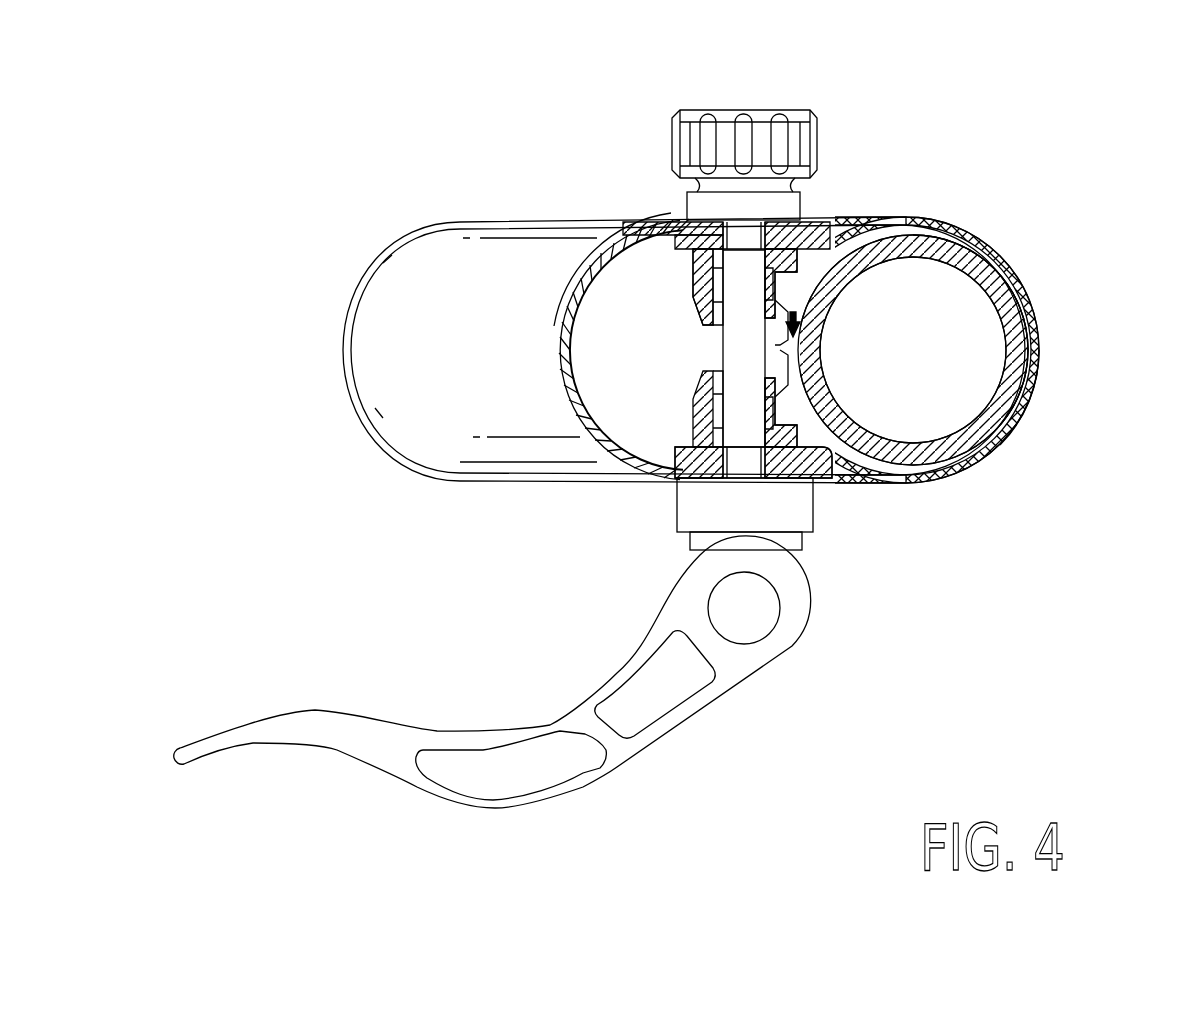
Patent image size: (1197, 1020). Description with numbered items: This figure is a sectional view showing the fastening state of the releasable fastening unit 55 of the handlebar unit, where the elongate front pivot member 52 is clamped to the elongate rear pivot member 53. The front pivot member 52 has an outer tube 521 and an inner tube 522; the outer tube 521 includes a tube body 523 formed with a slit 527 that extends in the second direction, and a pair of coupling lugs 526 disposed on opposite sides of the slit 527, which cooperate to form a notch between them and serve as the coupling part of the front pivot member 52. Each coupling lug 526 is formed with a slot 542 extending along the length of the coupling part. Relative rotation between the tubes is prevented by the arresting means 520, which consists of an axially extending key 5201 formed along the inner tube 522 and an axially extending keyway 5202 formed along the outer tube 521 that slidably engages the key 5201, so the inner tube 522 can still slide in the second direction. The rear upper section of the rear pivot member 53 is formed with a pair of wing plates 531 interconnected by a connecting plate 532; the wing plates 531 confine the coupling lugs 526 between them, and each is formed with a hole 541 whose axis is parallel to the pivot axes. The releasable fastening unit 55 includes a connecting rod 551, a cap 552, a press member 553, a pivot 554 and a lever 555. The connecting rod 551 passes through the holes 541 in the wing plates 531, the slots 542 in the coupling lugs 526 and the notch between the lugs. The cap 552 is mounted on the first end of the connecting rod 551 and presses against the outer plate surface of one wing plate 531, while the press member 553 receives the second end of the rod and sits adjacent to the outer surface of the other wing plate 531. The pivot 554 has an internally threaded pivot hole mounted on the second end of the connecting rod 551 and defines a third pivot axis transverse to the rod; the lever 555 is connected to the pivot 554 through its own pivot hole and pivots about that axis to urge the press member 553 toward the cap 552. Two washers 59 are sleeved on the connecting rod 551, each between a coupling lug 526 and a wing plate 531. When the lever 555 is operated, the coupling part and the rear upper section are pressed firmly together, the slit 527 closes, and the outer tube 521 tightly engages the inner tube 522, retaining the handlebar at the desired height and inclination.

The front pivot member 52 is at (1003, 224).
The rear pivot member 53 is at (510, 210).
The releasable fastening unit 55 is at (598, 805).
The washers 59 is at (630, 245).
The means for arresting relative rotation 520 is at (855, 228).
The outer tube 521 is at (1037, 275).
The inner tube 522 is at (1017, 345).
The tube body 523 is at (1037, 400).
The coupling lugs 526 is at (703, 294).
The slit 527 is at (745, 342).
The wing plates 531 is at (790, 220).
The connecting plate 532 is at (560, 340).
The holes 541 is at (680, 218).
The slots 542 is at (697, 259).
The connecting rod 551 is at (738, 363).
The cap 552 is at (818, 136).
The press member 553 is at (798, 507).
The pivot 554 is at (758, 627).
The lever 555 is at (677, 722).
The key 5201 is at (797, 357).
The keyway 5202 is at (900, 451).